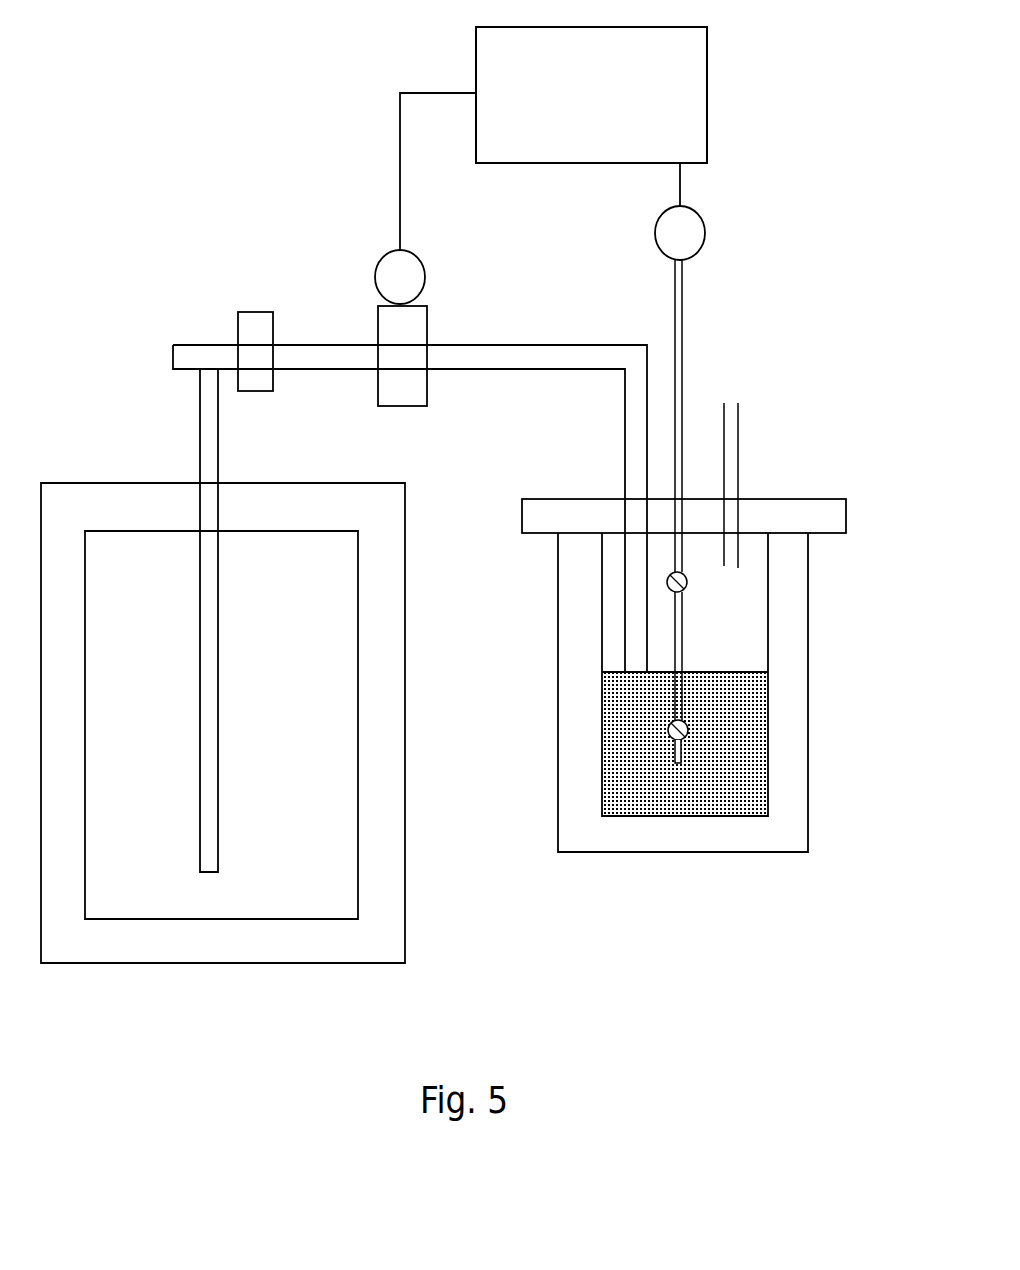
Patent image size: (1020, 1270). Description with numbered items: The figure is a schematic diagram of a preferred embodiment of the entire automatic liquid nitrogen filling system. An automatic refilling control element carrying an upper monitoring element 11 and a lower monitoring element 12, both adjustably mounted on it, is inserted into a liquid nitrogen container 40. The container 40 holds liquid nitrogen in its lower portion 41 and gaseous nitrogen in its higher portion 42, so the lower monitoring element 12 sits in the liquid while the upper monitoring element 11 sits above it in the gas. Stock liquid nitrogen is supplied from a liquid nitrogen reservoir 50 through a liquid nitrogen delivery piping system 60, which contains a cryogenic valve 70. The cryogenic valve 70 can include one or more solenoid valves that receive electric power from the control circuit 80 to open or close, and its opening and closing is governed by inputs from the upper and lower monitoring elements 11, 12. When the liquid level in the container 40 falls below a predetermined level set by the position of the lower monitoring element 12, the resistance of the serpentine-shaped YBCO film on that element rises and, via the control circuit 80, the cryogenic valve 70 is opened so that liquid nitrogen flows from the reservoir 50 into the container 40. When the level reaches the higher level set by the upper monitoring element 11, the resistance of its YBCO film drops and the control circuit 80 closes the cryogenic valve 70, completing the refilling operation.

The control circuit 80 is at (553, 138).
The cryogenic valve 70 is at (378, 262).
The liquid nitrogen delivery piping system 60 is at (316, 345).
The liquid nitrogen reservoir 50 is at (88, 478).
The liquid nitrogen container 40 is at (553, 762).
The higher portion 42 is at (739, 651).
The lower portion 41 is at (685, 744).
The upper monitoring element 11 is at (722, 583).
The lower monitoring element 12 is at (725, 738).